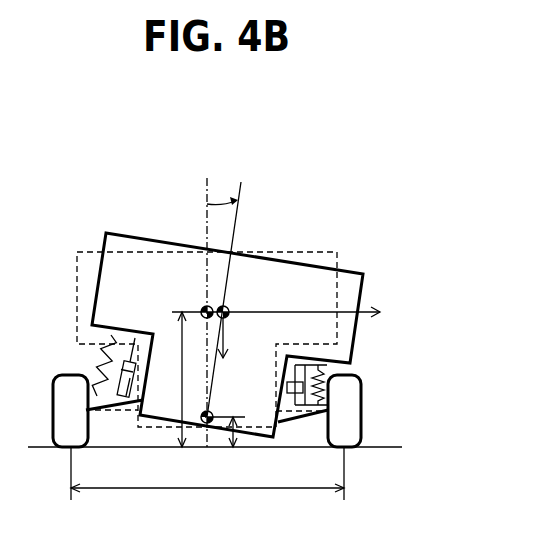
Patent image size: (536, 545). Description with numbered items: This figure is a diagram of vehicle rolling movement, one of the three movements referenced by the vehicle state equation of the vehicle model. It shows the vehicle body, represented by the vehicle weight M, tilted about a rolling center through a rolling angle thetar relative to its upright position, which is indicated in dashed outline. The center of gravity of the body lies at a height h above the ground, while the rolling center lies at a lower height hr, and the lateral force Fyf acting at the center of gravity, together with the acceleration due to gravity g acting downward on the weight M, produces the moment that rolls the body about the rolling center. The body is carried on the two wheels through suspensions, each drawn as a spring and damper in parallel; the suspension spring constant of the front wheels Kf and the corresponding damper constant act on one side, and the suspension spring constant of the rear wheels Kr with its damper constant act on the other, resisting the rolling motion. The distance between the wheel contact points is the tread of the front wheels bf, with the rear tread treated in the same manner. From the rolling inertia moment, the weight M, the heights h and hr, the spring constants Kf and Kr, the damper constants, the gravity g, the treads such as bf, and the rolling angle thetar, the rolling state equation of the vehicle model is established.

The vehicle weight M is at (220, 335).
The rolling angle thetar is at (222, 191).
The lateral force Fyf+Fyr Fyf is at (276, 302).
The acceleration due to gravity g is at (225, 350).
The height of the center of gravity h is at (174, 379).
The height of the rolling center hr is at (225, 421).
The suspension spring constant of the front wheels Kf is at (281, 413).
The suspension spring constant of the rear wheels Kr is at (388, 432).
The tread of the front wheels bf is at (207, 513).